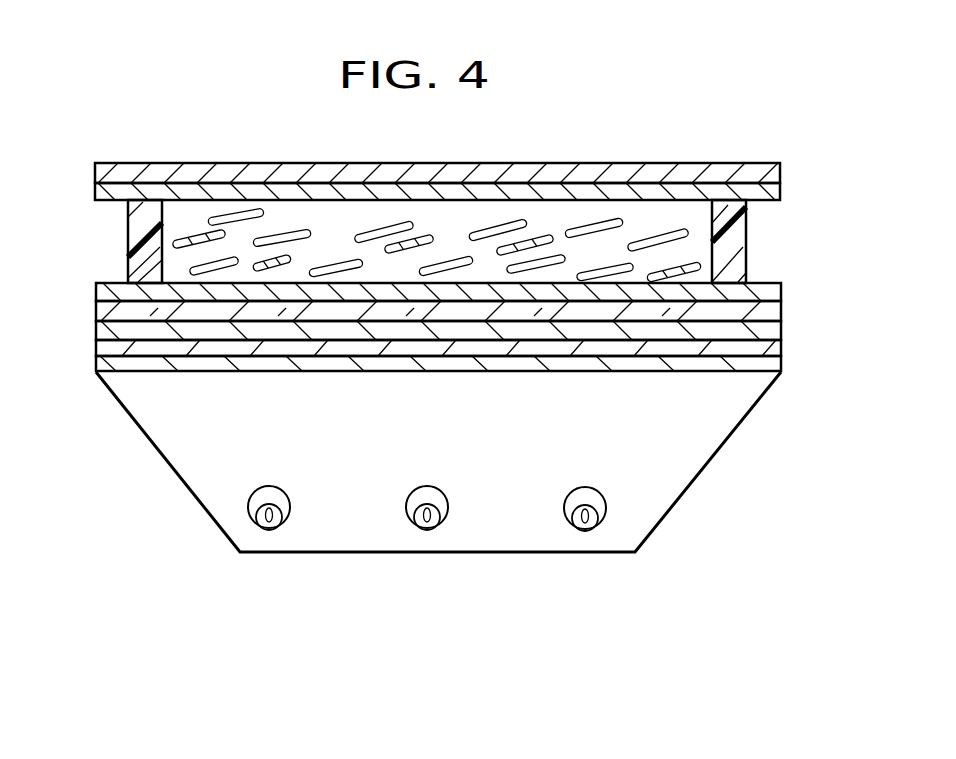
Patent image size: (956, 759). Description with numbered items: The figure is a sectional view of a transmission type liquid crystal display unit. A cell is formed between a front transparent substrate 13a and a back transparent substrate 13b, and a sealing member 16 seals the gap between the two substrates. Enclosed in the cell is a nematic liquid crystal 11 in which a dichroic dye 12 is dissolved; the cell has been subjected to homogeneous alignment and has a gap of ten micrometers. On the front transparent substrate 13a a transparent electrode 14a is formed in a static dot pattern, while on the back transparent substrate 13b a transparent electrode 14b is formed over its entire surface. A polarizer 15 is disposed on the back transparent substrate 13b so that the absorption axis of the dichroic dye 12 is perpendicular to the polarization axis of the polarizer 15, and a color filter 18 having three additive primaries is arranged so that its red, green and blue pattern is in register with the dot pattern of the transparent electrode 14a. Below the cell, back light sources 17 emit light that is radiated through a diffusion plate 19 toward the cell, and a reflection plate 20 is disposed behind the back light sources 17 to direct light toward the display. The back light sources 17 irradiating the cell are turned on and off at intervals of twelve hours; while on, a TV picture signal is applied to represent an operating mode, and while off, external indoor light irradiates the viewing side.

The liquid crystal 11 is at (293, 238).
The dichroic dye 12 is at (423, 240).
The front transparent substrate 13a is at (780, 172).
The back transparent substrate 13b is at (96, 312).
The transparent electrode 14a is at (780, 196).
The transparent electrode 14b is at (782, 290).
The polarizer 15 is at (775, 335).
The sealing member 16 is at (746, 258).
The back light sources 17 is at (585, 488).
The color filter 18 is at (96, 348).
The diffusion plate 19 is at (781, 372).
The reflection plate 20 is at (655, 530).